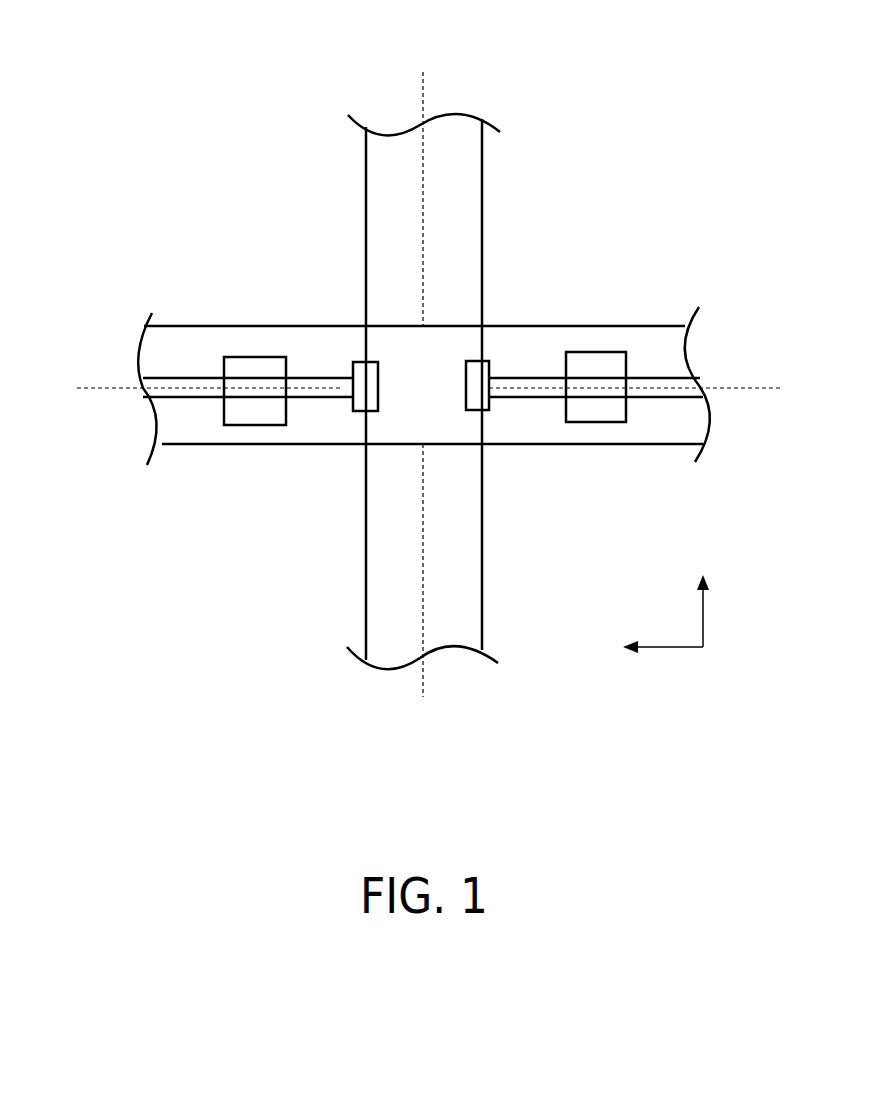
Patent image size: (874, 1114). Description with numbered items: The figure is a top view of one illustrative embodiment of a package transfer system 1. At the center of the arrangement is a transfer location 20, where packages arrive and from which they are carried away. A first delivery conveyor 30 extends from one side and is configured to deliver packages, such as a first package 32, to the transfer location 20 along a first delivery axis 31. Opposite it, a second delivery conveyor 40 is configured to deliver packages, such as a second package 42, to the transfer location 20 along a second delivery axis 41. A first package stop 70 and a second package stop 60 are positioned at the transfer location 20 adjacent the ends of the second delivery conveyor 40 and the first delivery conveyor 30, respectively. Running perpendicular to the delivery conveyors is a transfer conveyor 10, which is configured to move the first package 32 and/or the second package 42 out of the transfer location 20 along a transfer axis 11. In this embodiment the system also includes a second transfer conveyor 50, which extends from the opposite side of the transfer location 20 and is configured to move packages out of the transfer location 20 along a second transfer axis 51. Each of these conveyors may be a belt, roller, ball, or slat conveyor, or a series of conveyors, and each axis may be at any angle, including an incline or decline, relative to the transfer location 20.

The package transfer system 1 is at (237, 100).
The transfer conveyor 10 is at (366, 593).
The transfer axis 11 is at (415, 583).
The transfer location 20 is at (437, 408).
The first delivery conveyor 30 is at (660, 326).
The first delivery axis 31 is at (651, 387).
The first package 32 is at (595, 357).
The second delivery conveyor 40 is at (268, 326).
The second delivery axis 41 is at (198, 387).
The second package 42 is at (248, 357).
The second transfer conveyor 50 is at (482, 215).
The second transfer axis 51 is at (424, 184).
The second package stop 60 is at (492, 363).
The first package stop 70 is at (352, 370).